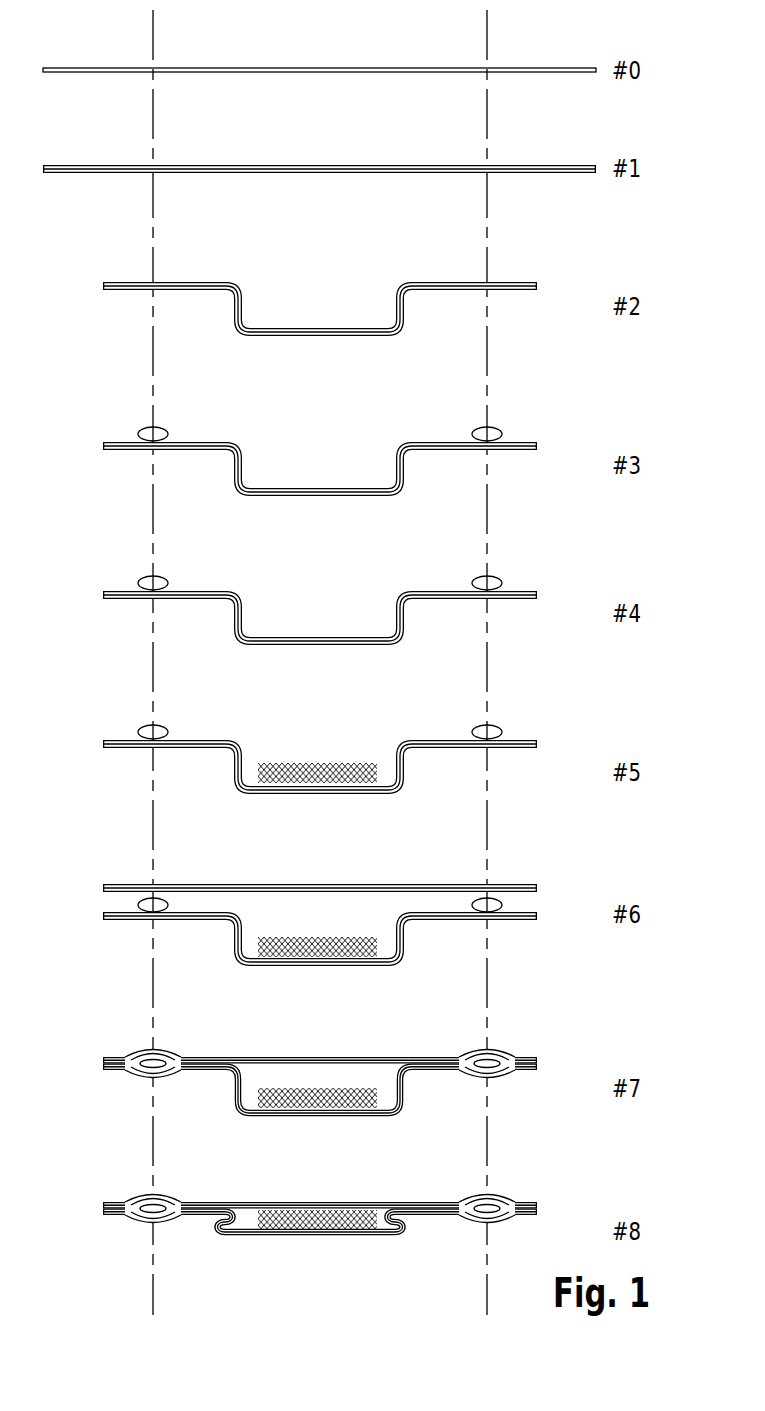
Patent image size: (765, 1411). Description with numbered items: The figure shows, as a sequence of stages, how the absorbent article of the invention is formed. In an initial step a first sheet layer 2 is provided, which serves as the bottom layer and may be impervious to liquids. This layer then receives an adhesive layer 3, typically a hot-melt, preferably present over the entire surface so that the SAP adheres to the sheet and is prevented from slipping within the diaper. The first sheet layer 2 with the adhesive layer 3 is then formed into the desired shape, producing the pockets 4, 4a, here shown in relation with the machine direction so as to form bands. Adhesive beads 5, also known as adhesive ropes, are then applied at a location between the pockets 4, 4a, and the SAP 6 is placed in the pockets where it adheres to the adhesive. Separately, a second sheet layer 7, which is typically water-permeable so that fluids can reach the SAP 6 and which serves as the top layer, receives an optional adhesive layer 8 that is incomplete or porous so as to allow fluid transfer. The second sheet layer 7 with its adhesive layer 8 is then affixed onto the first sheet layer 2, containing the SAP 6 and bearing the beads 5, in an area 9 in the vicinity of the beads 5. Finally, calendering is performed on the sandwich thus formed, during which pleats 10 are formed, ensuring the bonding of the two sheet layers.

The first sheet layer 2 is at (248, 66).
The adhesive layer 3 is at (335, 165).
The pocket 4 is at (404, 308).
The adhesive beads 5 is at (497, 429).
The pocket 4a is at (404, 620).
The SAP 6 is at (378, 773).
The second sheet layer 7 is at (362, 884).
The adhesive layer 8 is at (318, 893).
The area 9 is at (452, 1040).
The pleats 10 is at (412, 1236).